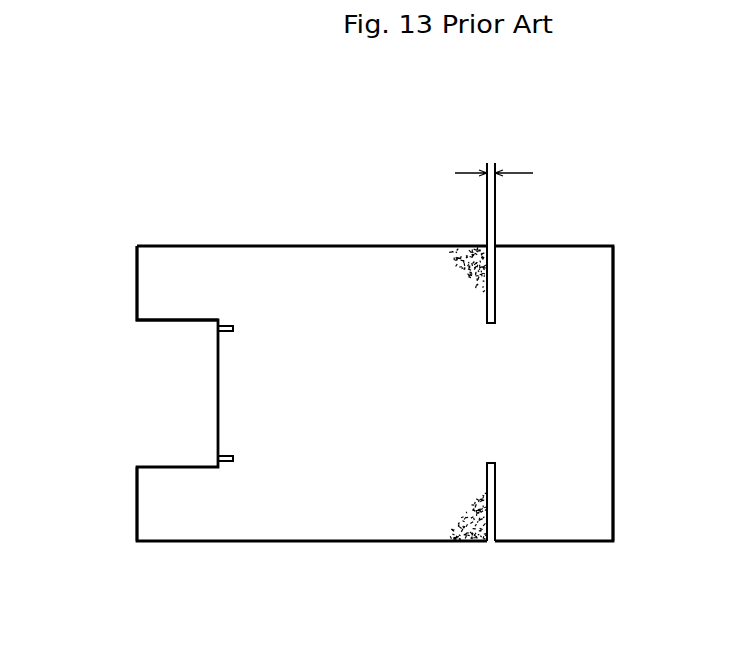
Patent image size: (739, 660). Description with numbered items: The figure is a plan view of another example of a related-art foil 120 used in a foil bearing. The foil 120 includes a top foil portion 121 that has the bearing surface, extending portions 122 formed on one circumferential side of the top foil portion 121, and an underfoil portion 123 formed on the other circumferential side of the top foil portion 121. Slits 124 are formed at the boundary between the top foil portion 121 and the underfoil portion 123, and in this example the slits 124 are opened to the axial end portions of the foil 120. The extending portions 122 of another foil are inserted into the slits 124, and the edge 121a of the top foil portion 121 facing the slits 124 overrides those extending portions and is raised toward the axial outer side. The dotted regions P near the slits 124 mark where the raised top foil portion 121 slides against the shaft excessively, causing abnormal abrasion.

The foil 120 is at (372, 357).
The top foil portion 121 is at (347, 270).
The extending portions 122 is at (180, 268).
The underfoil portion 123 is at (588, 380).
The slits 124 is at (490, 273).
The edge of the top foil portion 121a is at (493, 320).
The regions P is at (467, 250).